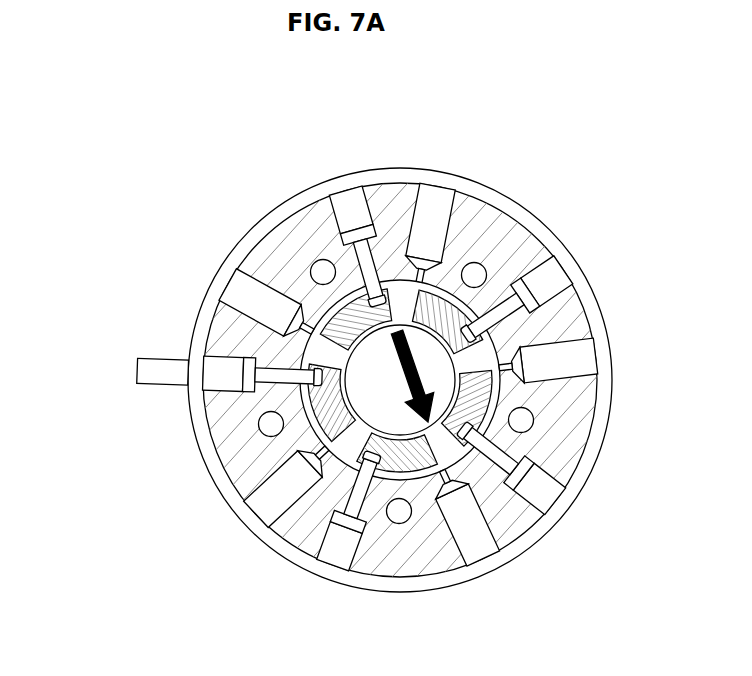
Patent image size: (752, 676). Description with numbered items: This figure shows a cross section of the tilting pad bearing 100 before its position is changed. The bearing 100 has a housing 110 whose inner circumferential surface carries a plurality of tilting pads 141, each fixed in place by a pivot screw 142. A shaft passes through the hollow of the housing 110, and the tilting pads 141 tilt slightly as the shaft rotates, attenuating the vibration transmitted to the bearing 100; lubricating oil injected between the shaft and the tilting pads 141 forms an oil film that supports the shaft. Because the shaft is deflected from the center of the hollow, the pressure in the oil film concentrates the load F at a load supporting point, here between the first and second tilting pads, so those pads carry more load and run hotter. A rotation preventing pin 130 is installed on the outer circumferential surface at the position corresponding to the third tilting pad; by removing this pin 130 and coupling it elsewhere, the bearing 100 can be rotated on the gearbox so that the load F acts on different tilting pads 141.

The tilting pad bearing 100 is at (240, 184).
The housing 110 is at (527, 210).
The rotation preventing pin 130 is at (137, 378).
The tilting pad 141 is at (414, 488).
The pivot screw 142 is at (337, 503).